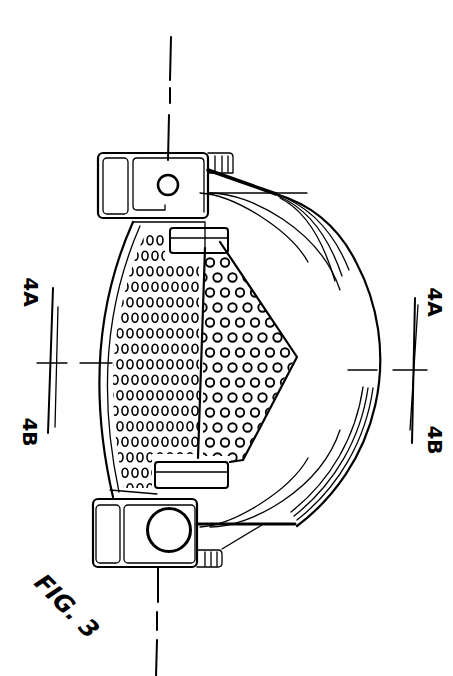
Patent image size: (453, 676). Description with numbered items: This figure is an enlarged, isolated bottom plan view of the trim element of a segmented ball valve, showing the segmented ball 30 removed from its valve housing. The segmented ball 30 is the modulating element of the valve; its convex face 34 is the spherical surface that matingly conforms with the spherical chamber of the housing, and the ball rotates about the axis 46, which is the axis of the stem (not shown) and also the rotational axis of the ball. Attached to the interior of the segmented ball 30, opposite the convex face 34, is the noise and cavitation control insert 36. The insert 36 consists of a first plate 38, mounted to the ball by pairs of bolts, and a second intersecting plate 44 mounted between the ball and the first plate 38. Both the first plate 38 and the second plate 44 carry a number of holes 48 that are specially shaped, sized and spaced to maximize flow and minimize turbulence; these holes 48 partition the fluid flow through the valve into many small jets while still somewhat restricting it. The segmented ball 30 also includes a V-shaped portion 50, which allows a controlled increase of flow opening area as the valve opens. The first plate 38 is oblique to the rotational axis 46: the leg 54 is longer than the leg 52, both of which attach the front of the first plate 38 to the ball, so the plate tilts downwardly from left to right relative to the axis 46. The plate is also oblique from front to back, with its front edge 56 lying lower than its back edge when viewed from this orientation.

The segmented ball 30 is at (376, 276).
The convex face 34 is at (361, 270).
The noise and cavitation control insert 36 is at (112, 270).
The first plate 38 is at (117, 312).
The second intersecting plate 44 is at (342, 260).
The axis 46 is at (176, 100).
The holes 48 is at (113, 348).
The V-shaped portion 50 is at (303, 263).
The leg 52 is at (222, 244).
The leg 54 is at (222, 477).
The front edge 56 is at (98, 418).